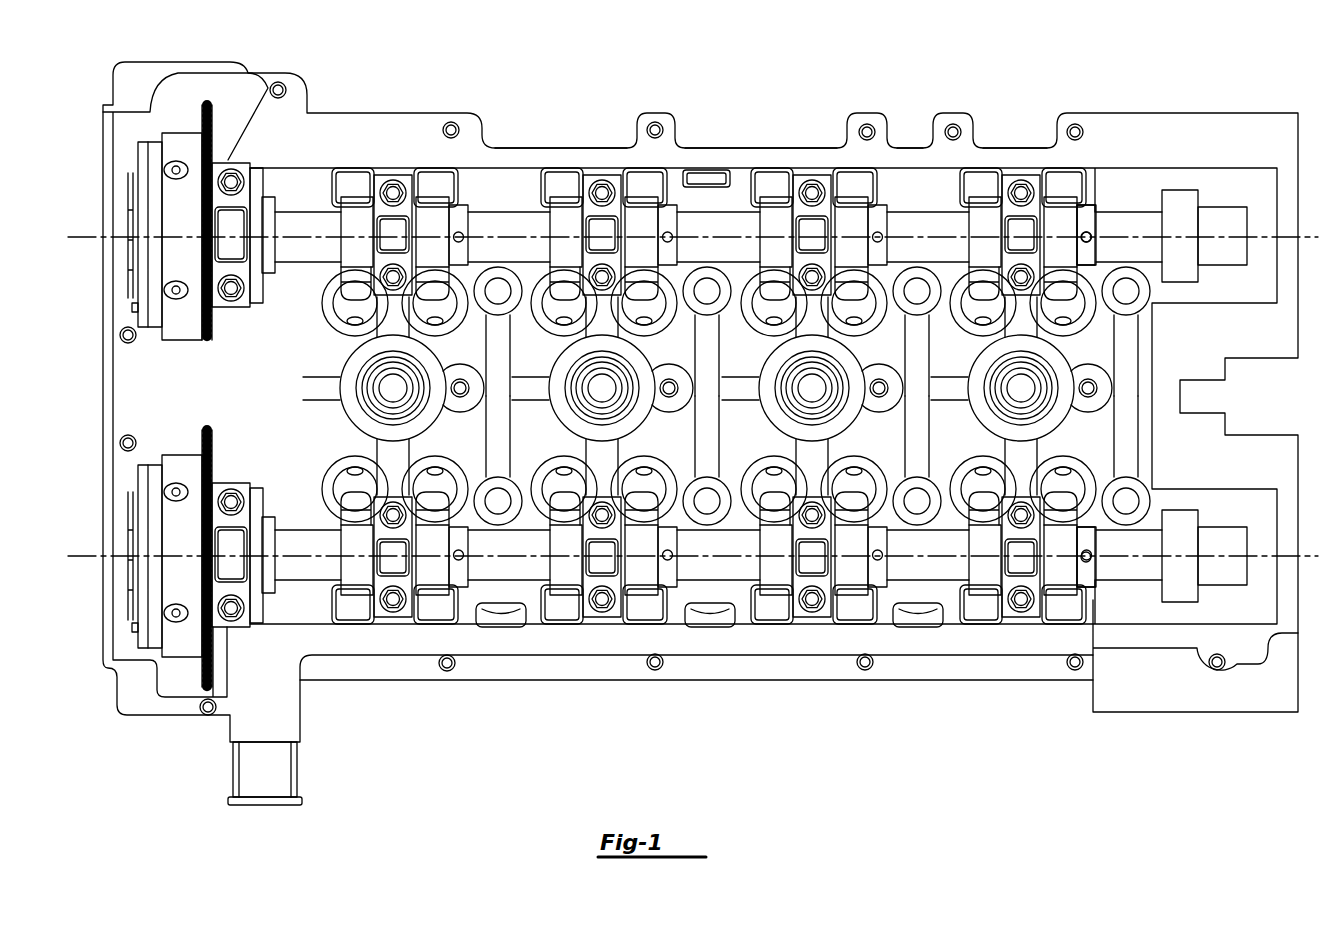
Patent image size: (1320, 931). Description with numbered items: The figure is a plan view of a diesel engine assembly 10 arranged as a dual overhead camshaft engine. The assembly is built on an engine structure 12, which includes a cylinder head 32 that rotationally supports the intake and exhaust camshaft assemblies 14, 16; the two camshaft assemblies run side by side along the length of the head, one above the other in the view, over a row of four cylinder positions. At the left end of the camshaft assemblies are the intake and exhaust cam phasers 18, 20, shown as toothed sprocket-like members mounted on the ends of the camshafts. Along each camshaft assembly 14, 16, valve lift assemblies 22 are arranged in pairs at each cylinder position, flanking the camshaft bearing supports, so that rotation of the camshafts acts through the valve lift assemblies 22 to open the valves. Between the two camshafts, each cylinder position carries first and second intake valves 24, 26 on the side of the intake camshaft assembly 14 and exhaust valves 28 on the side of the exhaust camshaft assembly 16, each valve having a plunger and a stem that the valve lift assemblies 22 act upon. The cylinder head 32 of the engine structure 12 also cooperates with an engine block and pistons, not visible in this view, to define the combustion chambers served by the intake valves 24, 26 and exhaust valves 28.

The diesel engine assembly 10 is at (896, 66).
The engine structure 12 is at (350, 112).
The intake camshaft assembly 14 is at (1122, 581).
The exhaust camshaft assembly 16 is at (1120, 212).
The intake cam phaser 18 is at (185, 660).
The exhaust cam phaser 20 is at (186, 135).
The valve lift assemblies 22 is at (437, 277).
The first intake valve 24 is at (345, 470).
The second intake valve 26 is at (437, 458).
The exhaust valves 28 is at (345, 328).
The cylinder head 32 is at (760, 148).